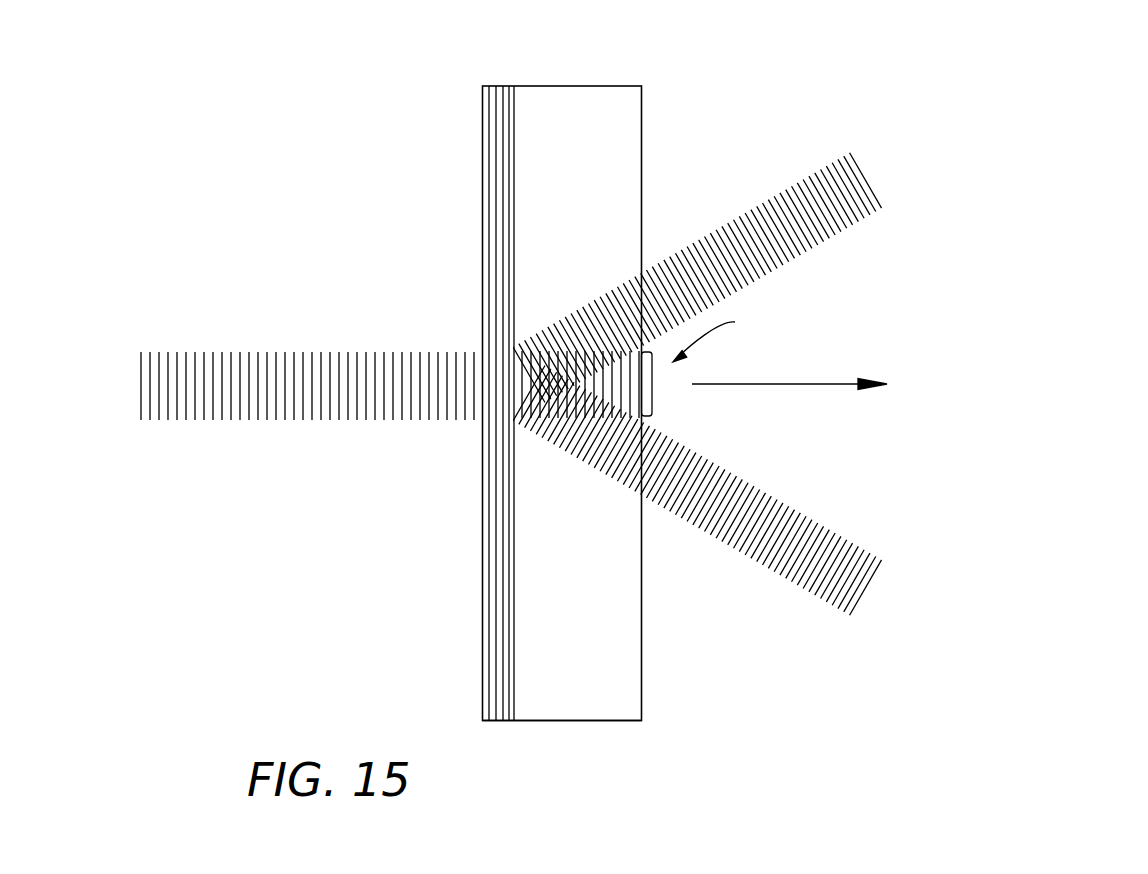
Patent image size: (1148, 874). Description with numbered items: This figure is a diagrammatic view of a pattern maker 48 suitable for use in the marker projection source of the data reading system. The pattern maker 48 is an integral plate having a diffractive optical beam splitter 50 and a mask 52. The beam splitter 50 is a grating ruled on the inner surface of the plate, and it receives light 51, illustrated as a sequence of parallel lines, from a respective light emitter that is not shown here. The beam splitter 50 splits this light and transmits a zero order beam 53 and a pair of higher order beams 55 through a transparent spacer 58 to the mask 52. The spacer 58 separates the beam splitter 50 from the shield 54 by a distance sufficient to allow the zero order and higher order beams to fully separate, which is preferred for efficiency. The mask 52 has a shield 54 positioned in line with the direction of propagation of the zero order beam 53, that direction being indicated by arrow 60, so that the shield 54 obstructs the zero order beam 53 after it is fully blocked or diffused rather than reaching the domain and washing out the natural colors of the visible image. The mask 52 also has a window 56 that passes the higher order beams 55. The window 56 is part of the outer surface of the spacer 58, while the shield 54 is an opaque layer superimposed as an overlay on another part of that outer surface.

The pattern maker 48 is at (623, 86).
The diffractive optical beam splitter 50 is at (483, 588).
The light 51 is at (285, 354).
The mask 52 is at (735, 322).
The zero order beam 53 is at (622, 435).
The shield 54 is at (652, 398).
The higher order beams 55 is at (620, 302).
The window 56 is at (642, 313).
The transparent spacer 58 is at (605, 721).
The arrow 60 is at (838, 384).